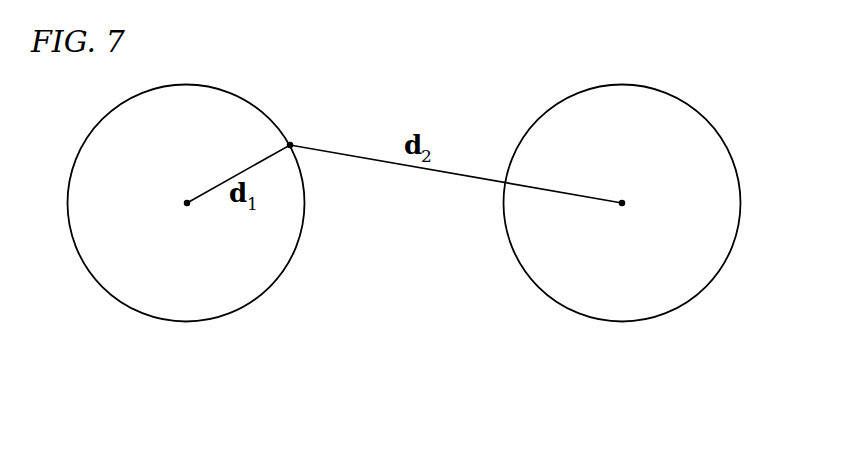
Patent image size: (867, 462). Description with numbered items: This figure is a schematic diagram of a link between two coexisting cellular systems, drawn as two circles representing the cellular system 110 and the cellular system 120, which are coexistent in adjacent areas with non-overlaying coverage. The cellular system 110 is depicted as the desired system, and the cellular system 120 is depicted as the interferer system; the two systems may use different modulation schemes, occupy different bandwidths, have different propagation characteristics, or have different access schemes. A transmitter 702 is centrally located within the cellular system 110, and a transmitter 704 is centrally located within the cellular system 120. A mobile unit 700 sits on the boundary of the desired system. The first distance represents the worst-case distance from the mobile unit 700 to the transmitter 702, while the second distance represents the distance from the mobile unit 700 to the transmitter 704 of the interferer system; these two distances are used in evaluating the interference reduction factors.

The cellular system 110 is at (120, 108).
The cellular system 120 is at (690, 110).
The mobile unit 700 is at (290, 143).
The transmitter 702 is at (187, 201).
The transmitter 704 is at (623, 201).